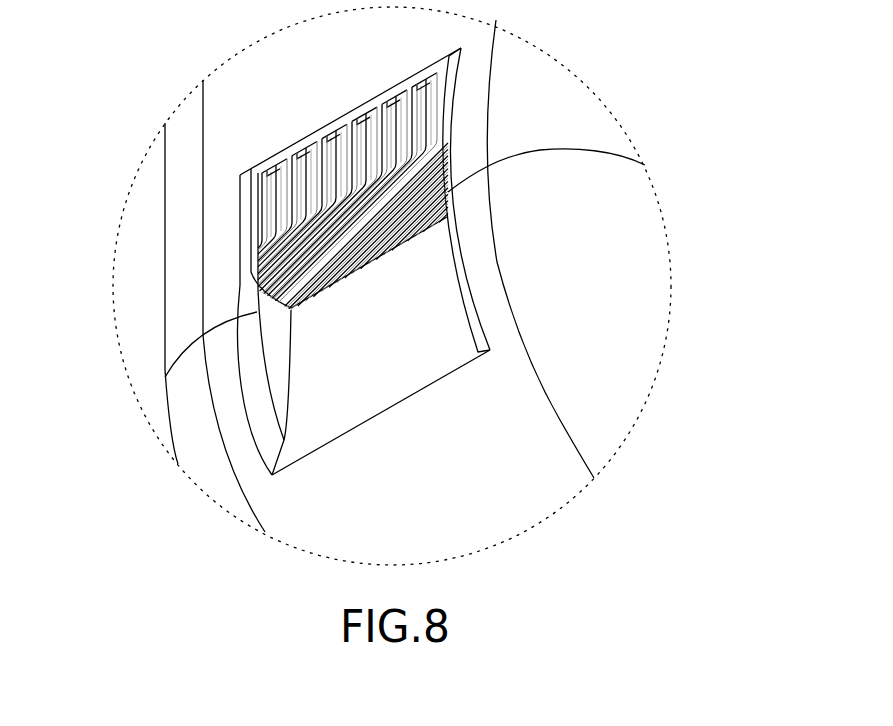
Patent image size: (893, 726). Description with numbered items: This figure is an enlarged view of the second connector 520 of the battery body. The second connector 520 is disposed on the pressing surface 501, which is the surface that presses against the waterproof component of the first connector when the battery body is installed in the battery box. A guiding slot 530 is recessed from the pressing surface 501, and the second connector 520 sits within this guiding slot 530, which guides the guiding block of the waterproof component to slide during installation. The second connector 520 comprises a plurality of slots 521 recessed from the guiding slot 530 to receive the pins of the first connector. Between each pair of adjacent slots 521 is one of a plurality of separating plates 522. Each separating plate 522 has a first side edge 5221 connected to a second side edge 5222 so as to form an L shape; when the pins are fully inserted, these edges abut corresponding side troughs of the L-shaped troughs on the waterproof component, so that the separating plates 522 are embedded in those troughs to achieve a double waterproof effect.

The pressing surface 501 is at (240, 111).
The second connector 520 is at (258, 183).
The slots 521 is at (272, 219).
The separating plates 522 is at (288, 243).
The first side edge 5221 is at (407, 137).
The second side edge 5222 is at (447, 212).
The guiding slot 530 is at (320, 352).